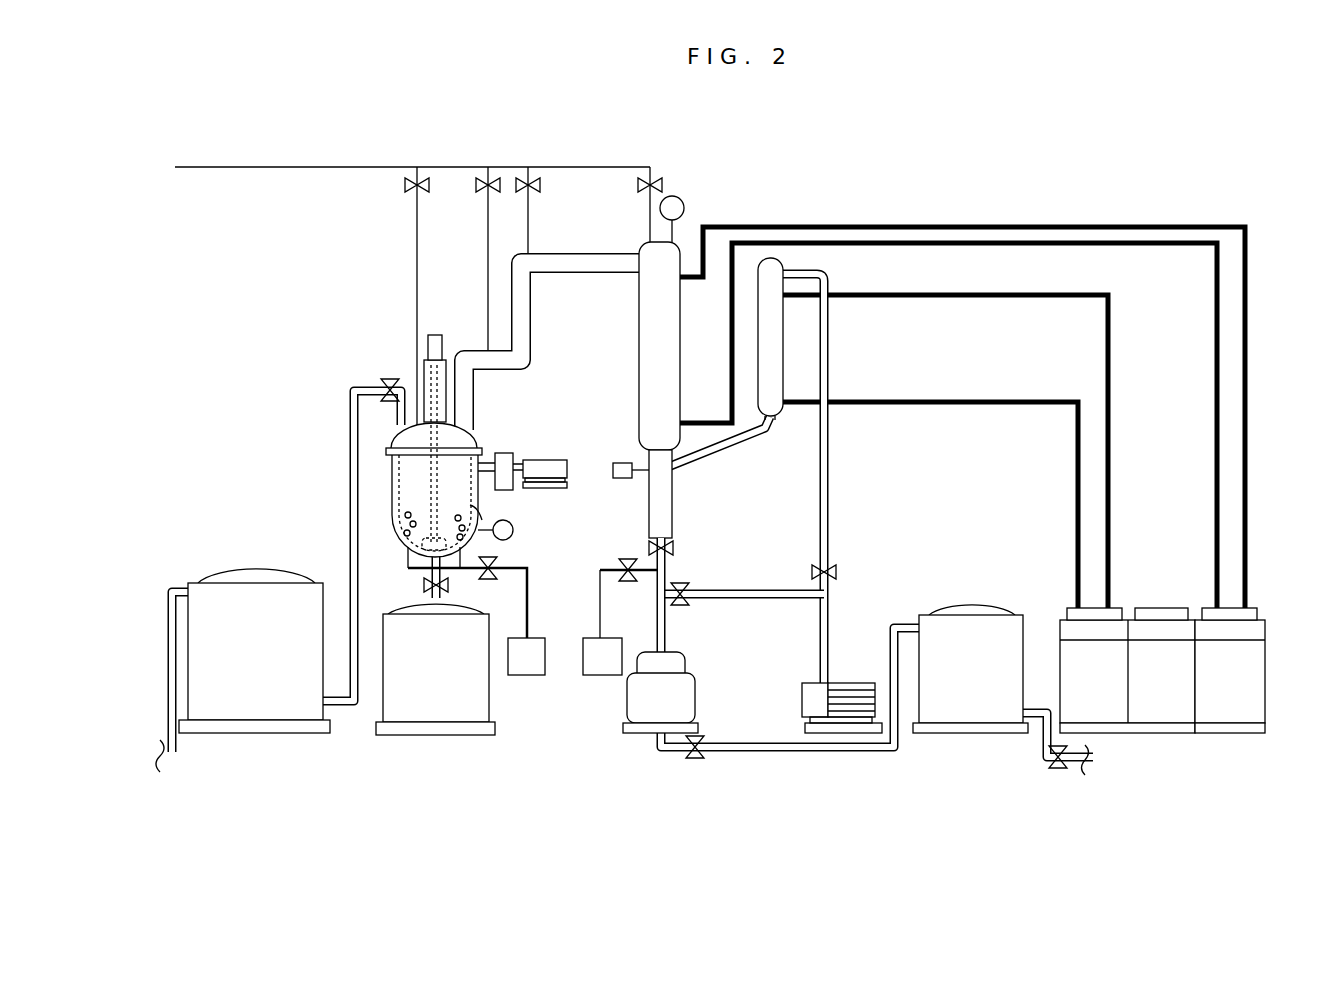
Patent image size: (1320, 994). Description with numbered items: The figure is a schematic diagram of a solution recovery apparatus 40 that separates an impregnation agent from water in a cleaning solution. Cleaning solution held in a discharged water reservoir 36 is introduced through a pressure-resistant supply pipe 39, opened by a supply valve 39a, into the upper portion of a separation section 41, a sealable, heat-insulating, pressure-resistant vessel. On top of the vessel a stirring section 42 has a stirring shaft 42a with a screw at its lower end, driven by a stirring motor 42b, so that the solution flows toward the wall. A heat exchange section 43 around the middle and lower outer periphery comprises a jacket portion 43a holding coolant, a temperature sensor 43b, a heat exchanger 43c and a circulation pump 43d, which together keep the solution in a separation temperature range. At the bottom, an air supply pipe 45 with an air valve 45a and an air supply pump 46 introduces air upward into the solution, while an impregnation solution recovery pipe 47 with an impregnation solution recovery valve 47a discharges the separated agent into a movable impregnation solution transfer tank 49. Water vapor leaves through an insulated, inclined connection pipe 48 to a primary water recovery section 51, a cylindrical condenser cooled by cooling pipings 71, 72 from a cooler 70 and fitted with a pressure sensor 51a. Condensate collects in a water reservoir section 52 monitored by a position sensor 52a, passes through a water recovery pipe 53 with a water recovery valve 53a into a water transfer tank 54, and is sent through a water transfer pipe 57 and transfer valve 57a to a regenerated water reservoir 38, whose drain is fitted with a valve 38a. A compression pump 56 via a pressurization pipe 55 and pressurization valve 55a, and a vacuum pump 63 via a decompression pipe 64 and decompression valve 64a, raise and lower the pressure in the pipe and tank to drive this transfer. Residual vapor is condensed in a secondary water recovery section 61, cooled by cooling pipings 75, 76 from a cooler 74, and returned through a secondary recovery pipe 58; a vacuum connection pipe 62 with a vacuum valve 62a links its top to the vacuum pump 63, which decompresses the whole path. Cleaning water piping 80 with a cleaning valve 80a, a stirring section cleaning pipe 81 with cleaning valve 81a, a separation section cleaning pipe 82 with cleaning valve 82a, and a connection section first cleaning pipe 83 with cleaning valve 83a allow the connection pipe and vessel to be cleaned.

The discharged water reservoir 36 is at (284, 566).
The regenerated water reservoir 38 is at (970, 600).
The drain valve 38a is at (1048, 758).
The supply pipe 39 is at (351, 390).
The supply valve 39a is at (394, 378).
The solution recovery apparatus 40 is at (1010, 133).
The separation section 41 is at (390, 435).
The stirring section 42 is at (434, 325).
The stirring shaft 42a is at (430, 488).
The stirring motor 42b is at (443, 341).
The heat exchange section 43 is at (524, 403).
The jacket portion 43a is at (482, 506).
The temperature sensor 43b is at (514, 530).
The heat exchanger 43c is at (500, 452).
The circulation pump 43d is at (540, 460).
The air supply pipe 45 is at (530, 602).
The air valve 45a is at (497, 568).
The air supply pump 46 is at (540, 637).
The impregnation solution recovery pipe 47 is at (432, 576).
The impregnation solution recovery valve 47a is at (424, 587).
The connection pipe 48 is at (592, 253).
The impregnation solution transfer tank 49 is at (470, 606).
The primary water recovery section 51 is at (638, 346).
The pressure sensor 51a is at (683, 208).
The water reservoir section 52 is at (648, 506).
The position sensor 52a is at (620, 462).
The water recovery pipe 53 is at (668, 634).
The water recovery valve 53a is at (674, 553).
The water transfer tank 54 is at (688, 665).
The pressurization pipe 55 is at (598, 574).
The pressurization valve 55a is at (624, 560).
The compression pump 56 is at (608, 636).
The water transfer pipe 57 is at (762, 745).
The transfer valve 57a is at (700, 740).
The secondary recovery pipe 58 is at (732, 452).
The secondary water recovery section 61 is at (786, 262).
The vacuum connection pipe 62 is at (832, 474).
The vacuum valve 62a is at (838, 572).
The vacuum pump 63 is at (840, 682).
The decompression pipe 64 is at (760, 592).
The decompression valve 64a is at (690, 590).
The cooler 70 is at (1257, 608).
The cooling piping 71 is at (1215, 364).
The cooling piping 72 is at (1247, 334).
The cooler 74 is at (1122, 608).
The cooling piping 75 is at (1062, 401).
The cooling piping 76 is at (1062, 294).
The cleaning water piping 80 is at (316, 167).
The cleaning valve 80a is at (662, 184).
The stirring section cleaning pipe 81 is at (415, 232).
The cleaning valve 81a is at (404, 185).
The separation section cleaning pipe 82 is at (486, 232).
The cleaning valve 82a is at (480, 178).
The connection section first cleaning pipe 83 is at (528, 232).
The cleaning valve 83a is at (541, 185).